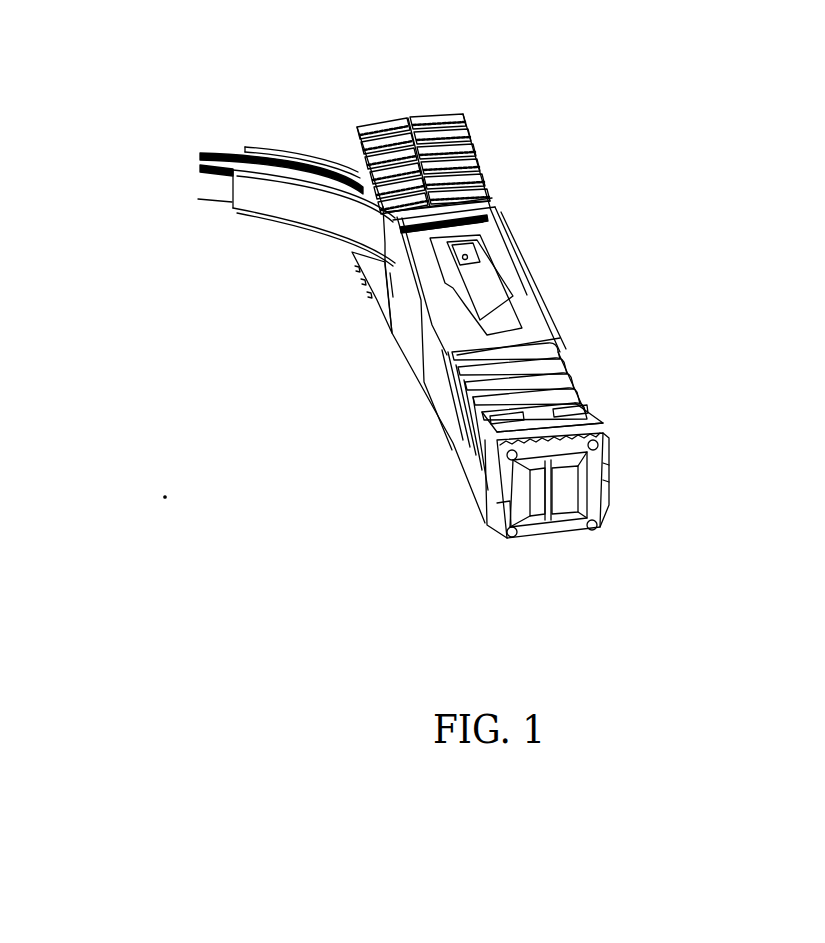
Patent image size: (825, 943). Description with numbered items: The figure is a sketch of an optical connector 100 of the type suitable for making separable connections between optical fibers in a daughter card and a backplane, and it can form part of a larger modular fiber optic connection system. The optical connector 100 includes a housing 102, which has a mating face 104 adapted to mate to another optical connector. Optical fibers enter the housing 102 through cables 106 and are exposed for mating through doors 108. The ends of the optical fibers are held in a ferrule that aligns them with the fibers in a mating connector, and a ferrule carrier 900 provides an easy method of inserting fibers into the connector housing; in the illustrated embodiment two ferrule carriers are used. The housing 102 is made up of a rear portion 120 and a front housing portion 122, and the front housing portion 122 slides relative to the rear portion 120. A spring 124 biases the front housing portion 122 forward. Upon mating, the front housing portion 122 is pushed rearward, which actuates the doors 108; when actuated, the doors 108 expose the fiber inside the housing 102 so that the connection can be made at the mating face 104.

The optical connector 100 is at (590, 308).
The housing 102 is at (350, 386).
The mating face 104 is at (590, 548).
The cables 106 is at (233, 152).
The doors 108 is at (503, 530).
The rear portion 120 is at (391, 333).
The front housing portion 122 is at (482, 497).
The spring 124 is at (573, 378).
The ferrule carrier 900 is at (463, 113).